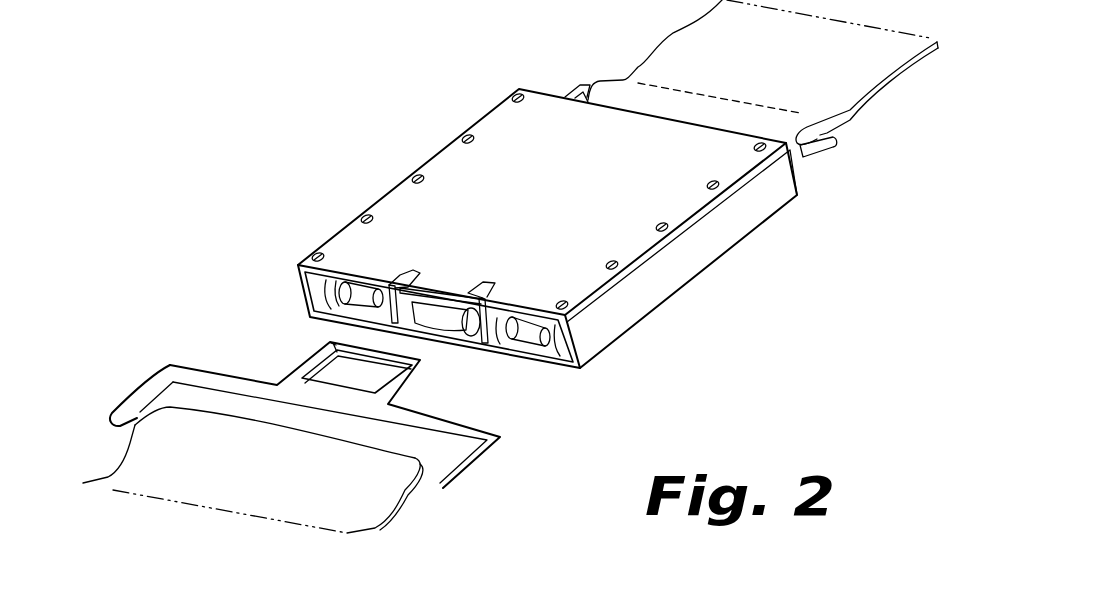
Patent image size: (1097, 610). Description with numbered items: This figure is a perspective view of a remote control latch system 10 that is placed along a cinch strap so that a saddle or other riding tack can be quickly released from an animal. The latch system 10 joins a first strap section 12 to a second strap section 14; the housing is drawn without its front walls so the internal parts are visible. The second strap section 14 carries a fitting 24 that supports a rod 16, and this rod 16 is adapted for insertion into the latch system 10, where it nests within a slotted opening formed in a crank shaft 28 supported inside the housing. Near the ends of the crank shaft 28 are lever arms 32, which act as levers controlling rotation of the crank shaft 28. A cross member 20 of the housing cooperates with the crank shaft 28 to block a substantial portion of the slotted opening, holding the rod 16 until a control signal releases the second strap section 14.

The remote control latch system 10 is at (425, 114).
The first strap section 12 is at (769, 71).
The second strap section 14 is at (313, 437).
The rod 16 is at (386, 346).
The cross member 20 is at (411, 282).
The fitting 24 is at (473, 460).
The crank shaft 28 is at (472, 300).
The lever arms 32 is at (352, 317).